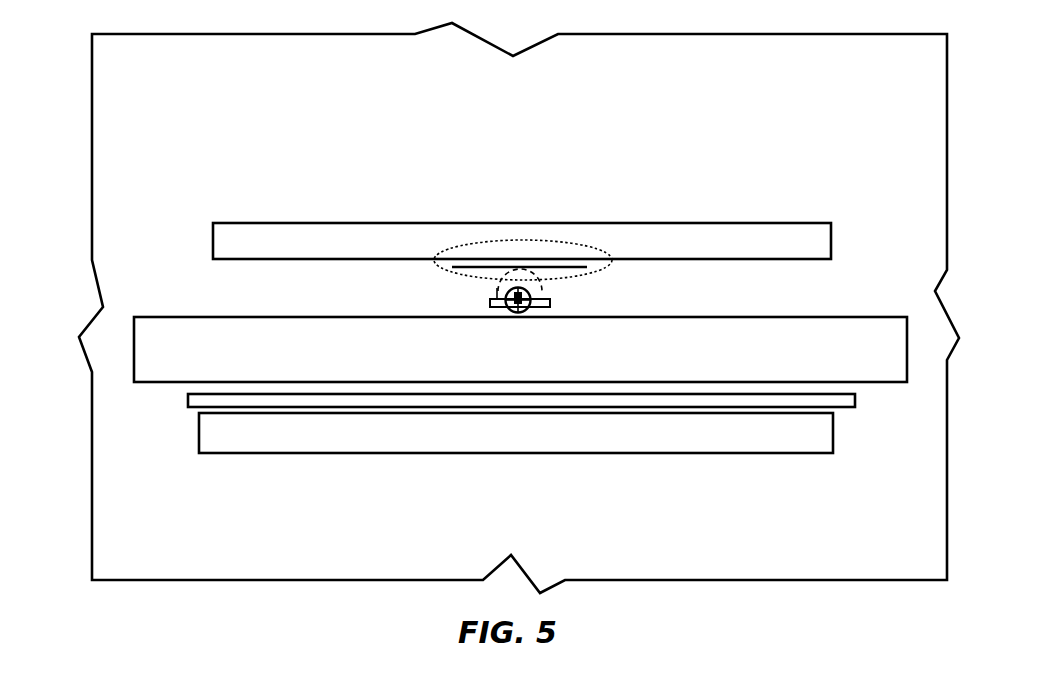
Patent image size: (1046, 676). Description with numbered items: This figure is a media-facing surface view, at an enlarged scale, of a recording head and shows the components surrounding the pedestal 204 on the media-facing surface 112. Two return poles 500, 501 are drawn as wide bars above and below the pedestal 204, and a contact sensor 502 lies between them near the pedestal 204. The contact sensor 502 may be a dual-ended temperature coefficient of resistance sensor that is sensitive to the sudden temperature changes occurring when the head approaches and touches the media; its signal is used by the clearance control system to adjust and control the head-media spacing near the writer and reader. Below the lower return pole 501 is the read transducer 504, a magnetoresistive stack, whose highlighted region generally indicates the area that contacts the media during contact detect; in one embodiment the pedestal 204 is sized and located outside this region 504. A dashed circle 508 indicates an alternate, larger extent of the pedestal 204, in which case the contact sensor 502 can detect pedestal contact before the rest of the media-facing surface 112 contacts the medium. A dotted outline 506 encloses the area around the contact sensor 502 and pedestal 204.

The media-facing surface 112 is at (128, 41).
The return pole 500 is at (409, 222).
The return pole 501 is at (792, 318).
The contact sensor 502 is at (466, 268).
The read transducer 504 is at (180, 395).
The region of interest 506 is at (519, 241).
The circle 508 is at (497, 290).
The pedestal 204 is at (543, 294).